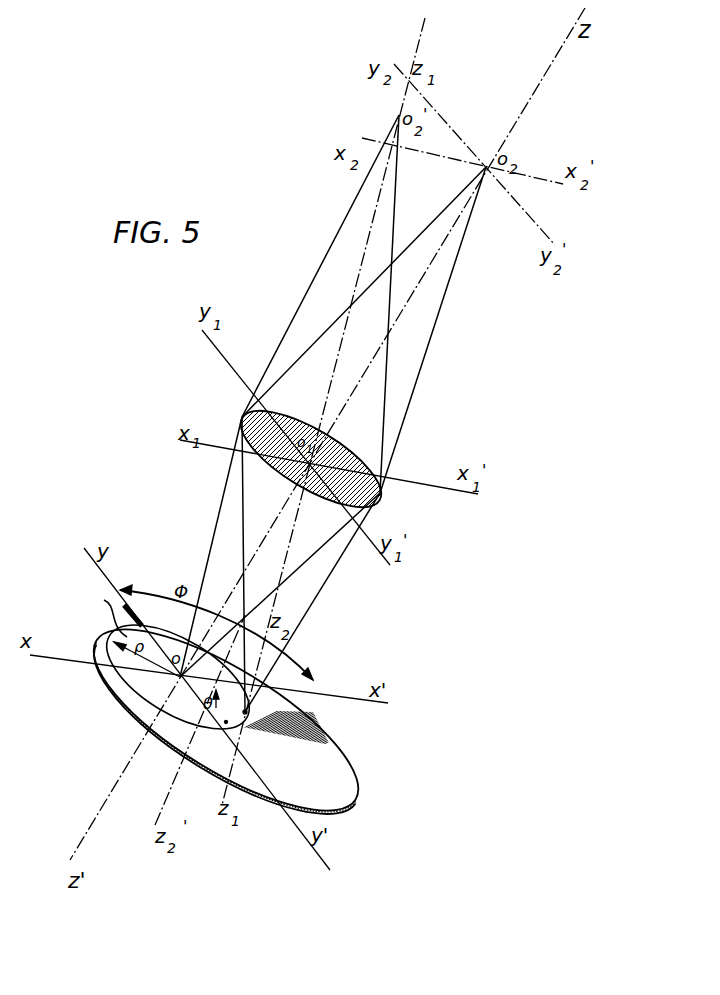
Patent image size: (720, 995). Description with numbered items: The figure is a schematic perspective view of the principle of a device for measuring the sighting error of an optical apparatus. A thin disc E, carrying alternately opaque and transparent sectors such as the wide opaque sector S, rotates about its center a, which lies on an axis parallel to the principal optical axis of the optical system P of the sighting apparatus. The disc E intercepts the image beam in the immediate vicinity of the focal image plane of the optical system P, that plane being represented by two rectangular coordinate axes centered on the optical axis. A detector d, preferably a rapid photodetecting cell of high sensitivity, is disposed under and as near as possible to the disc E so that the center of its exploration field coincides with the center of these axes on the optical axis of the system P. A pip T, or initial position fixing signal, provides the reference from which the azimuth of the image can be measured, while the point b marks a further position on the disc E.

The optical system P is at (372, 496).
The thin disc E is at (338, 767).
The opaque sector S is at (262, 703).
The pip T is at (139, 614).
The detector d is at (109, 612).
The center of disc a is at (220, 739).
The point b is at (239, 702).